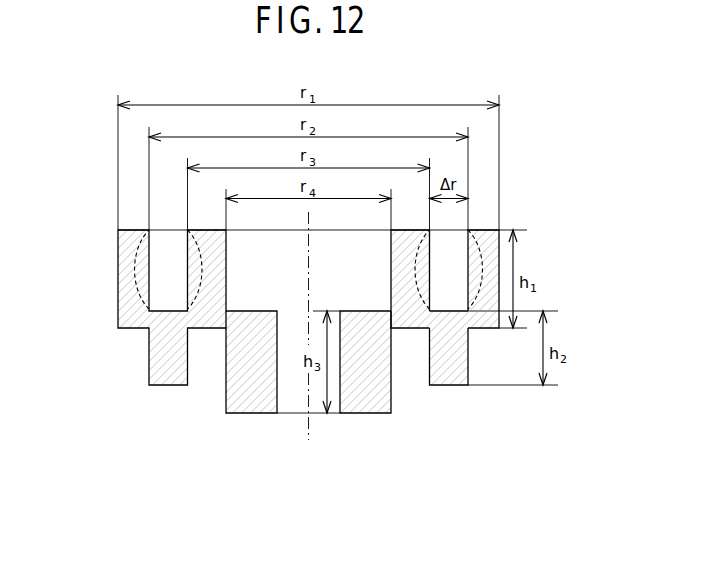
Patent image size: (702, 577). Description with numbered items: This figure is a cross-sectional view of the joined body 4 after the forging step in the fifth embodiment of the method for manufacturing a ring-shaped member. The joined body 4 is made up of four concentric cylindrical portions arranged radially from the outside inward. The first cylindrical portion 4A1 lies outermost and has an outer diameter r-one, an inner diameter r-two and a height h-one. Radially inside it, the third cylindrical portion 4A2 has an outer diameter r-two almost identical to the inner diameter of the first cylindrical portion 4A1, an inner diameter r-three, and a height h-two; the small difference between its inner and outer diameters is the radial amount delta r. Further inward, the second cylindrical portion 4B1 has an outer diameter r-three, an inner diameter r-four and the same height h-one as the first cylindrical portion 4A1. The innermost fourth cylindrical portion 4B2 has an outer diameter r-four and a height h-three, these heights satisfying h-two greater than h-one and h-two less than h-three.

The joined body 4 is at (103, 228).
The first cylindrical portion 4A1 is at (485, 231).
The third cylindrical portion 4A2 is at (457, 386).
The second cylindrical portion 4B1 is at (400, 263).
The fourth cylindrical portion 4B2 is at (372, 414).